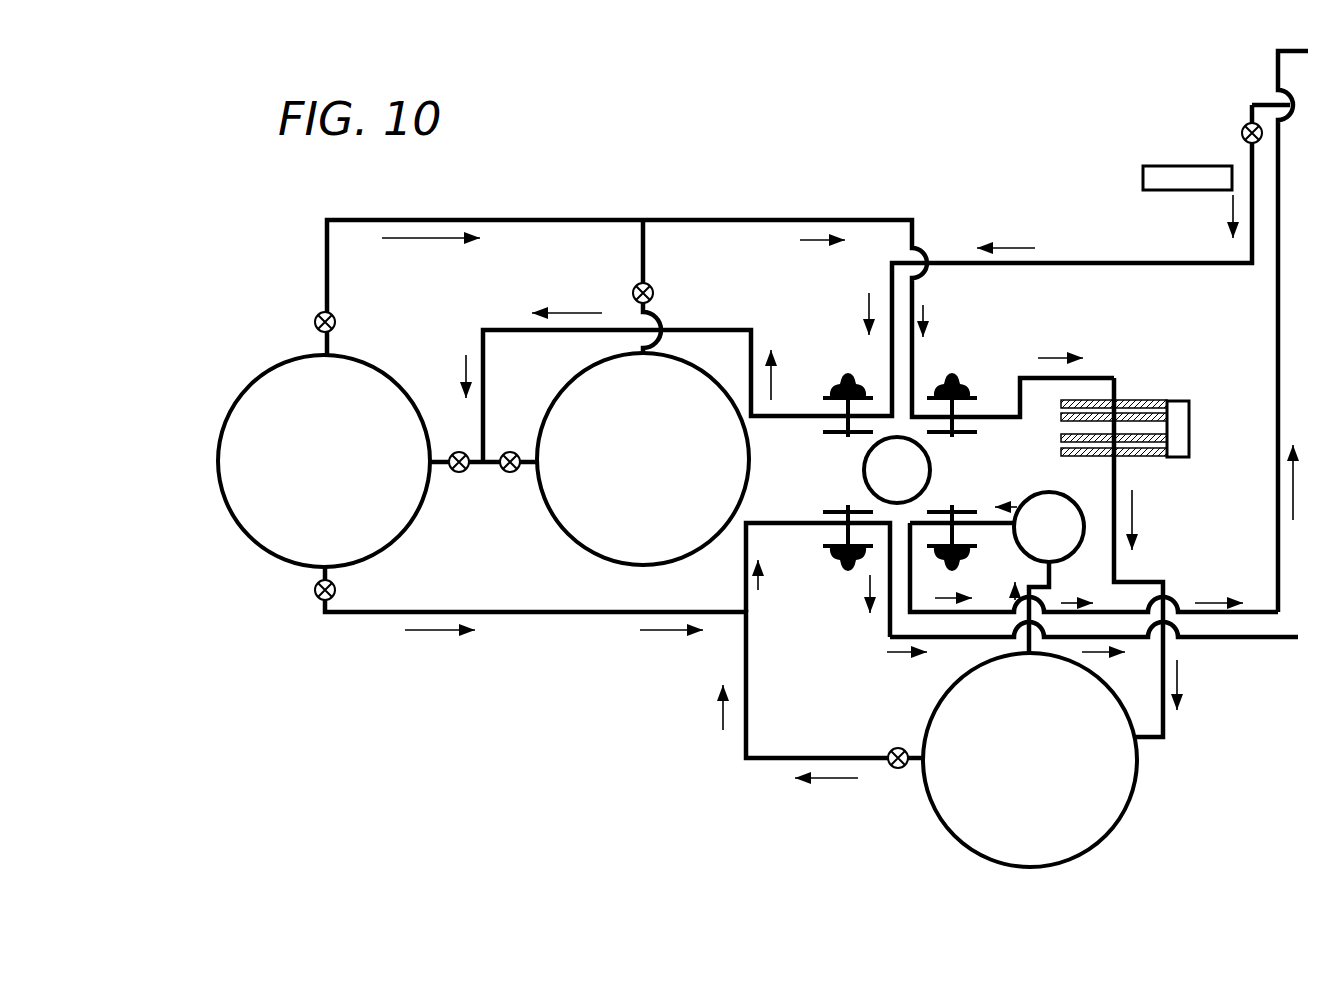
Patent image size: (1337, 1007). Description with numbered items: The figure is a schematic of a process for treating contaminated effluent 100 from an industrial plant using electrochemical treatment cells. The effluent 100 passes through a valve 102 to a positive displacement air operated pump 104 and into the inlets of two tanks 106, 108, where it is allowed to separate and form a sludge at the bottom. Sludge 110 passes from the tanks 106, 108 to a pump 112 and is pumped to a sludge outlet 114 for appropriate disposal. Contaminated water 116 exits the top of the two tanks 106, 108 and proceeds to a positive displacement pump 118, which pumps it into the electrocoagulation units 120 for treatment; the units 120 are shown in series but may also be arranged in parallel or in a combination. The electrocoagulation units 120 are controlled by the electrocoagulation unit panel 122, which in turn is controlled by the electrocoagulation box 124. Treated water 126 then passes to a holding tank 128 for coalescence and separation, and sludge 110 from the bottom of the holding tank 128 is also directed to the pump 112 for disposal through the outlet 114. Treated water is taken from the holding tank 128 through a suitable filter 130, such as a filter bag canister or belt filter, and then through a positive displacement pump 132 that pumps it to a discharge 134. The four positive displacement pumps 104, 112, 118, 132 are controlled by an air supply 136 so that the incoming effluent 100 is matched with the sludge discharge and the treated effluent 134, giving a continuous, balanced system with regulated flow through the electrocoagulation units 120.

The contaminated effluent 100 is at (1055, 263).
The valve 102 is at (1243, 128).
The positive displacement air operated pump 104 is at (847, 374).
The tank 106 is at (350, 360).
The tank 108 is at (600, 400).
The sludge 110 is at (442, 611).
The pump 112 is at (838, 570).
The sludge outlet 114 is at (1235, 642).
The contaminated water 116 is at (475, 220).
The positive displacement pump 118 is at (955, 374).
The electrocoagulation units 120 is at (1142, 400).
The electrocoagulation unit panel 122 is at (1185, 420).
The electrocoagulation box 124 is at (1140, 168).
The treated water 126 is at (1142, 580).
The holding tank 128 is at (1123, 768).
The filter 130 is at (1040, 507).
The positive displacement pump 132 is at (953, 507).
The discharge 134 is at (1275, 78).
The air supply 136 is at (868, 463).